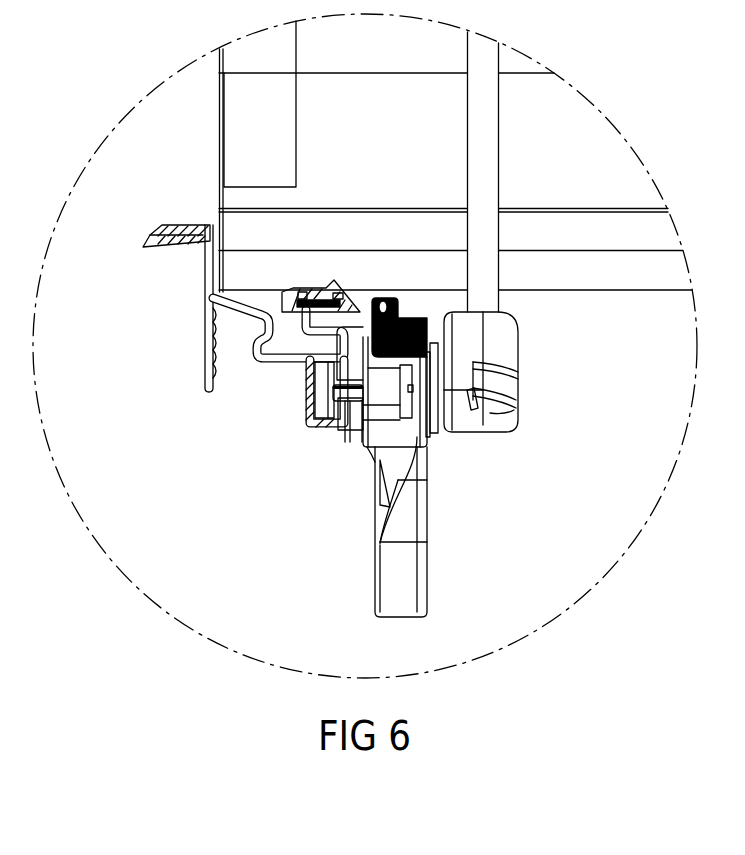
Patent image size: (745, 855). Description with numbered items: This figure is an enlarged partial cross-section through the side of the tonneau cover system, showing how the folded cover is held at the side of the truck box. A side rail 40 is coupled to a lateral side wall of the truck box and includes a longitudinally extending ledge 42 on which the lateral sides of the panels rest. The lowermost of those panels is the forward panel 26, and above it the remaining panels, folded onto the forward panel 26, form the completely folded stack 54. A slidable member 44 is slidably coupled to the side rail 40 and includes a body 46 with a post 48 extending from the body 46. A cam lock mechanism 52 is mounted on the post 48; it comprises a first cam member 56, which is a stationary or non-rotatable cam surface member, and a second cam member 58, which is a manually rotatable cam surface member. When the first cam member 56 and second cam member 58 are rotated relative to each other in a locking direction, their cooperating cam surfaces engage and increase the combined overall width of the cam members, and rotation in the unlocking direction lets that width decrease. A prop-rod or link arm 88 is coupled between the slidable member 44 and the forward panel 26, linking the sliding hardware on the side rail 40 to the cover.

The forward panel 26 is at (243, 97).
The side rail 40 is at (208, 295).
The ledge 42 is at (314, 274).
The slidable member 44 is at (297, 395).
The body 46 is at (328, 410).
The post 48 is at (357, 400).
The cam lock mechanism 52 is at (337, 606).
The folded stack 54 is at (205, 151).
The first cam member 56 is at (363, 462).
The second cam member 58 is at (441, 483).
The link arm 88 is at (492, 155).